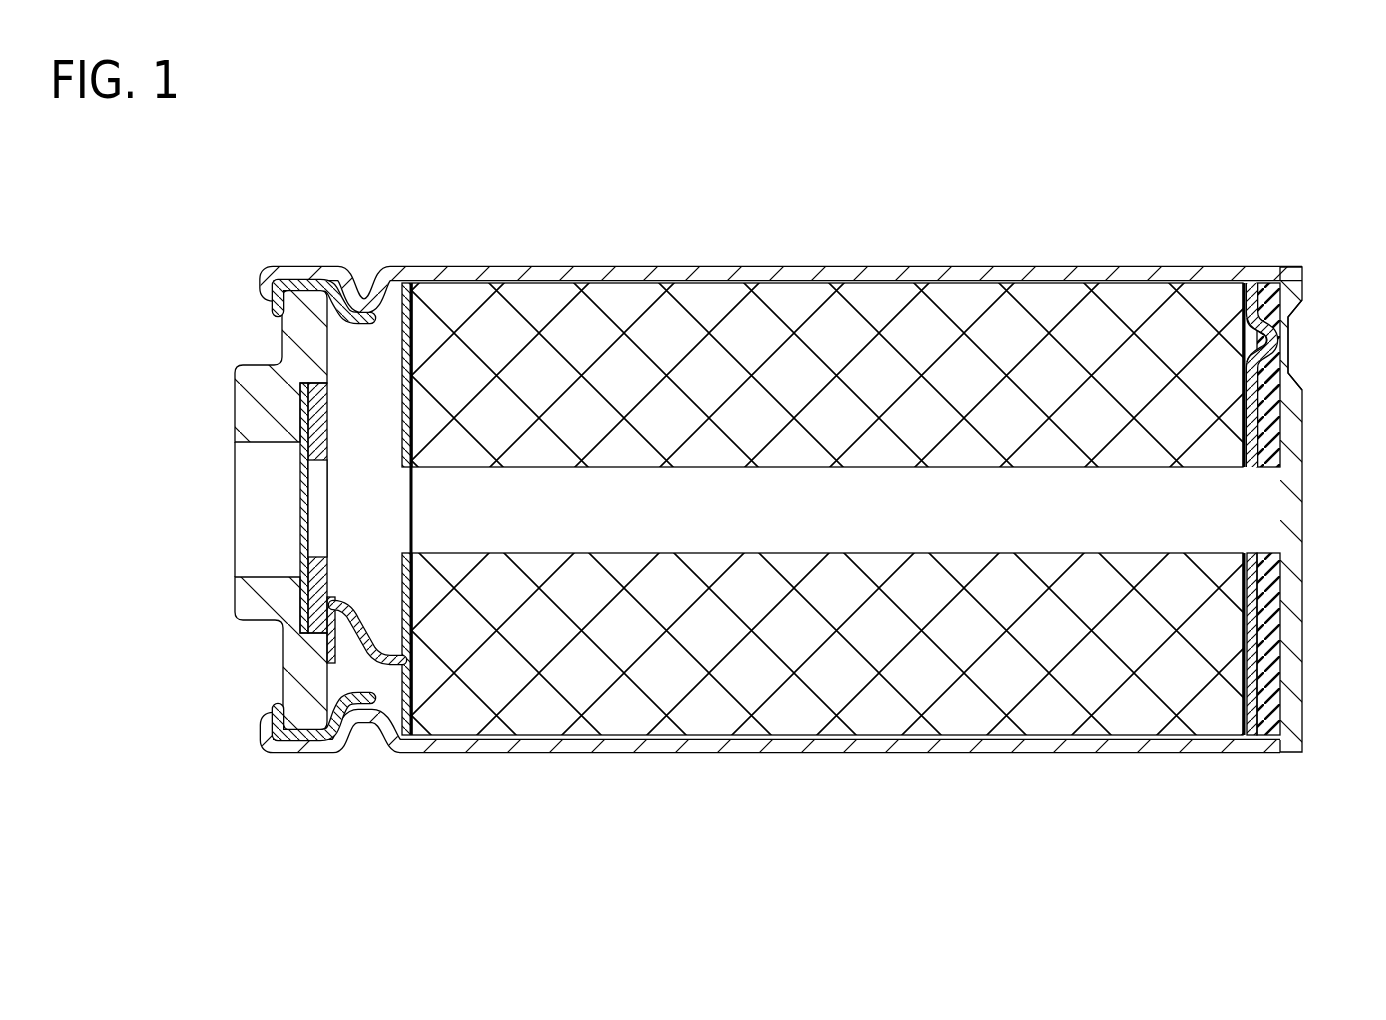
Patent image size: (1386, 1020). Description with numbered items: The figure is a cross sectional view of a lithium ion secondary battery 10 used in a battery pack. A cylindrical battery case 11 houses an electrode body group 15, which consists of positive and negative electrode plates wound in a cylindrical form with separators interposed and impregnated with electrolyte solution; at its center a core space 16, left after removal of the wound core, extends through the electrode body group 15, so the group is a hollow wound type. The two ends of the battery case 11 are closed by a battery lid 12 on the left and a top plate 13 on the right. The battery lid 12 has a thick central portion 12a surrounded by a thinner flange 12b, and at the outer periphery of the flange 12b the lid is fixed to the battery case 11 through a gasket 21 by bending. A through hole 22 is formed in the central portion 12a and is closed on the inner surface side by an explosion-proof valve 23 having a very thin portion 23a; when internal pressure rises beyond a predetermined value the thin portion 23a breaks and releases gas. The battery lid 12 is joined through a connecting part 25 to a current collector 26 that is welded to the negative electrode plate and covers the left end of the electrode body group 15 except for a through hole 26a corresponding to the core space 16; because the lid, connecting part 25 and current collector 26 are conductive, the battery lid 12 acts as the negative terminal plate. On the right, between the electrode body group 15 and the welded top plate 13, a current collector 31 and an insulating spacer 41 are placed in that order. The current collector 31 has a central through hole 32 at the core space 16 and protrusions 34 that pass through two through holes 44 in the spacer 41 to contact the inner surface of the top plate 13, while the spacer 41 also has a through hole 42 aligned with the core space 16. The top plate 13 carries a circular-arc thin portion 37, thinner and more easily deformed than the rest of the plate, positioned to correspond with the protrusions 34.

The lithium ion secondary battery 10 is at (1010, 206).
The battery case 11 is at (823, 752).
The battery lid 12 is at (300, 660).
The central portion 12a is at (248, 392).
The flange 12b is at (300, 328).
The top plate 13 is at (1290, 630).
The electrode body group 15 is at (958, 712).
The core space 16 is at (1009, 522).
The gasket 21 is at (327, 300).
The through hole 22 is at (262, 568).
The explosion-proof valve 23 is at (302, 447).
The thin portion 23a is at (302, 487).
The connecting part 25 is at (358, 603).
The current collector 26 is at (402, 585).
The through hole 26a is at (413, 533).
The current collector 31 is at (1252, 738).
The through hole 32 is at (1252, 553).
The protrusions 34 is at (1278, 347).
The thin portion 37 is at (1286, 330).
The spacer 41 is at (1272, 738).
The through hole 42 is at (1272, 553).
The through holes 44 is at (1270, 372).